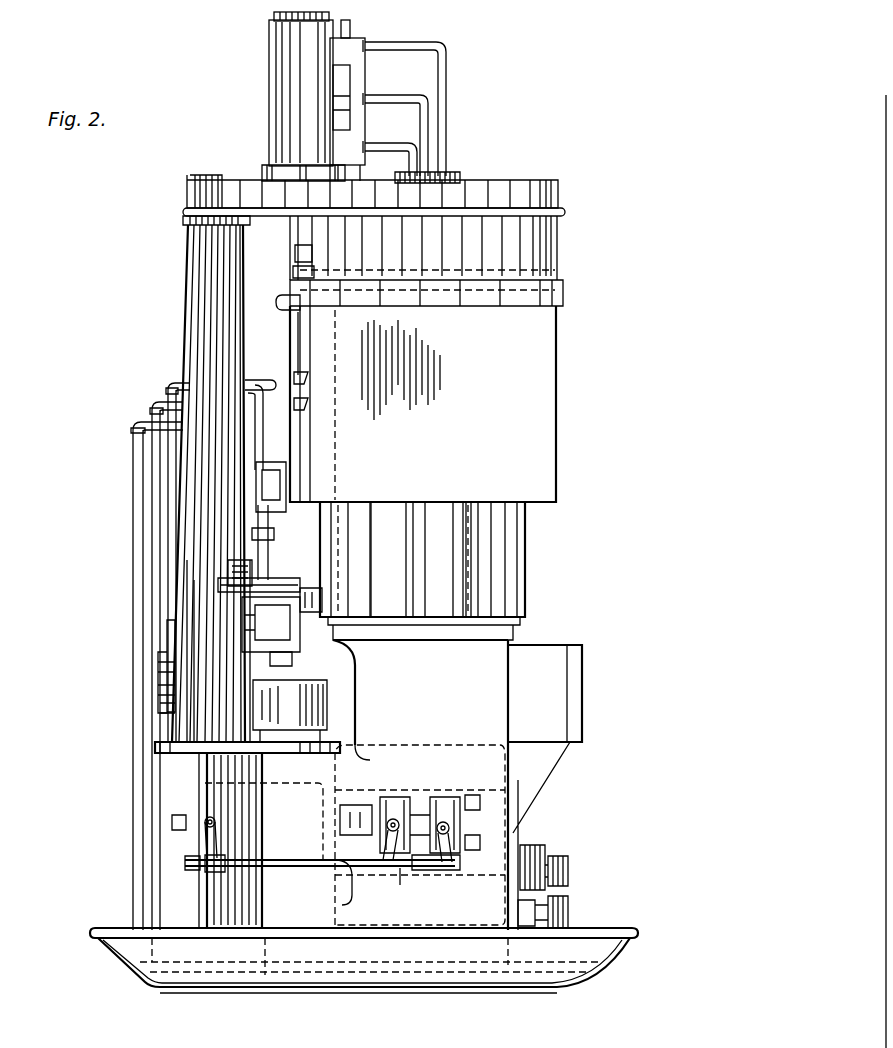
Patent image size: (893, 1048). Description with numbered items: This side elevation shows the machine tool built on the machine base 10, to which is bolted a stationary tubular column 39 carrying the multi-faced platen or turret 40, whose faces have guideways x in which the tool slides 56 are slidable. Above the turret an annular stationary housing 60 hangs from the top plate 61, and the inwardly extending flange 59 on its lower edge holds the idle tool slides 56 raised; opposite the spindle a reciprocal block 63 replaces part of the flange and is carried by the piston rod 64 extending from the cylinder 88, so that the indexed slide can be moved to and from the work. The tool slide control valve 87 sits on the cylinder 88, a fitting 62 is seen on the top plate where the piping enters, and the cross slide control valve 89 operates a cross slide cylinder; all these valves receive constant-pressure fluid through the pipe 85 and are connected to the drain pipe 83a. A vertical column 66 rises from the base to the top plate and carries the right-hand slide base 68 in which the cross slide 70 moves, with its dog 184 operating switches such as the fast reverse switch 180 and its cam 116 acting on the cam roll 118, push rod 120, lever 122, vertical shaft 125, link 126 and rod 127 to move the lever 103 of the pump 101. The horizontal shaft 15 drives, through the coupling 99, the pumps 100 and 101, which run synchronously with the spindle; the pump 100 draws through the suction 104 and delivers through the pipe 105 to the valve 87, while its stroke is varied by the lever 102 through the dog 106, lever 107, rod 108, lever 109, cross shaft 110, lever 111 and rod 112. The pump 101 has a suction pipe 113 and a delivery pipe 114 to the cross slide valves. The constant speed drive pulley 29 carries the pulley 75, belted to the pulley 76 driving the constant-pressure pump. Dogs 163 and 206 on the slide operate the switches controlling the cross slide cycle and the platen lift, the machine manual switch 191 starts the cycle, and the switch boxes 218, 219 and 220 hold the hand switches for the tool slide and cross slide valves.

The machine base 10 is at (160, 904).
The horizontal shaft 15 is at (332, 770).
The constant speed drive pulley 29 is at (533, 845).
The tubular column 39 is at (520, 626).
The multi-faced platen or turret 40 is at (520, 544).
The tool slide 56 is at (302, 436).
The inwardly extending lateral flange 59 is at (562, 260).
The annular stationary housing 60 is at (558, 246).
The top plate 61 is at (558, 202).
The pipe base block 62 is at (462, 178).
The reciprocal block 63 is at (297, 272).
The piston rod 64 is at (297, 255).
The vertical column 66 is at (190, 254).
The right-hand slide base 68 is at (240, 612).
The cross slide 70 is at (292, 630).
The pulley 75 is at (568, 868).
The pulley 76 is at (568, 915).
The drain pipe 83a is at (420, 95).
The pipe 85 is at (378, 143).
The tool slide control valve 87 is at (347, 75).
The cylinder 88 is at (270, 43).
The cross slide control valve 89 is at (286, 470).
The coupling 99 is at (320, 851).
The pump 100 is at (396, 796).
The pump 101 is at (436, 800).
The lever 102 is at (402, 860).
The lever 103 is at (452, 866).
The suction 104 is at (419, 894).
The pipe 105 is at (380, 48).
The dog 106 is at (282, 302).
The lever 107 is at (264, 380).
The rod 108 is at (168, 443).
The lever 109 is at (172, 822).
The cross shaft 110 is at (216, 822).
The lever 111 is at (220, 846).
The rod 112 is at (350, 896).
The suction pipe 113 is at (455, 842).
The delivery pipe 114 is at (152, 488).
The cam 116 is at (322, 600).
The cam roll 118 is at (275, 585).
The push rod 120 is at (268, 546).
The lever 122 is at (228, 566).
The vertical shaft 125 is at (155, 745).
The link 126 is at (205, 866).
The rod 127 is at (283, 868).
The dog 163 is at (306, 404).
The fast reverse switch 180 is at (282, 690).
The dog 184 is at (295, 660).
The machine manual switch 191 is at (160, 711).
The dog 206 is at (300, 372).
The switch box 218 is at (158, 646).
The switch box 219 is at (158, 667).
The switch box 220 is at (158, 689).
The guideways x is at (378, 542).